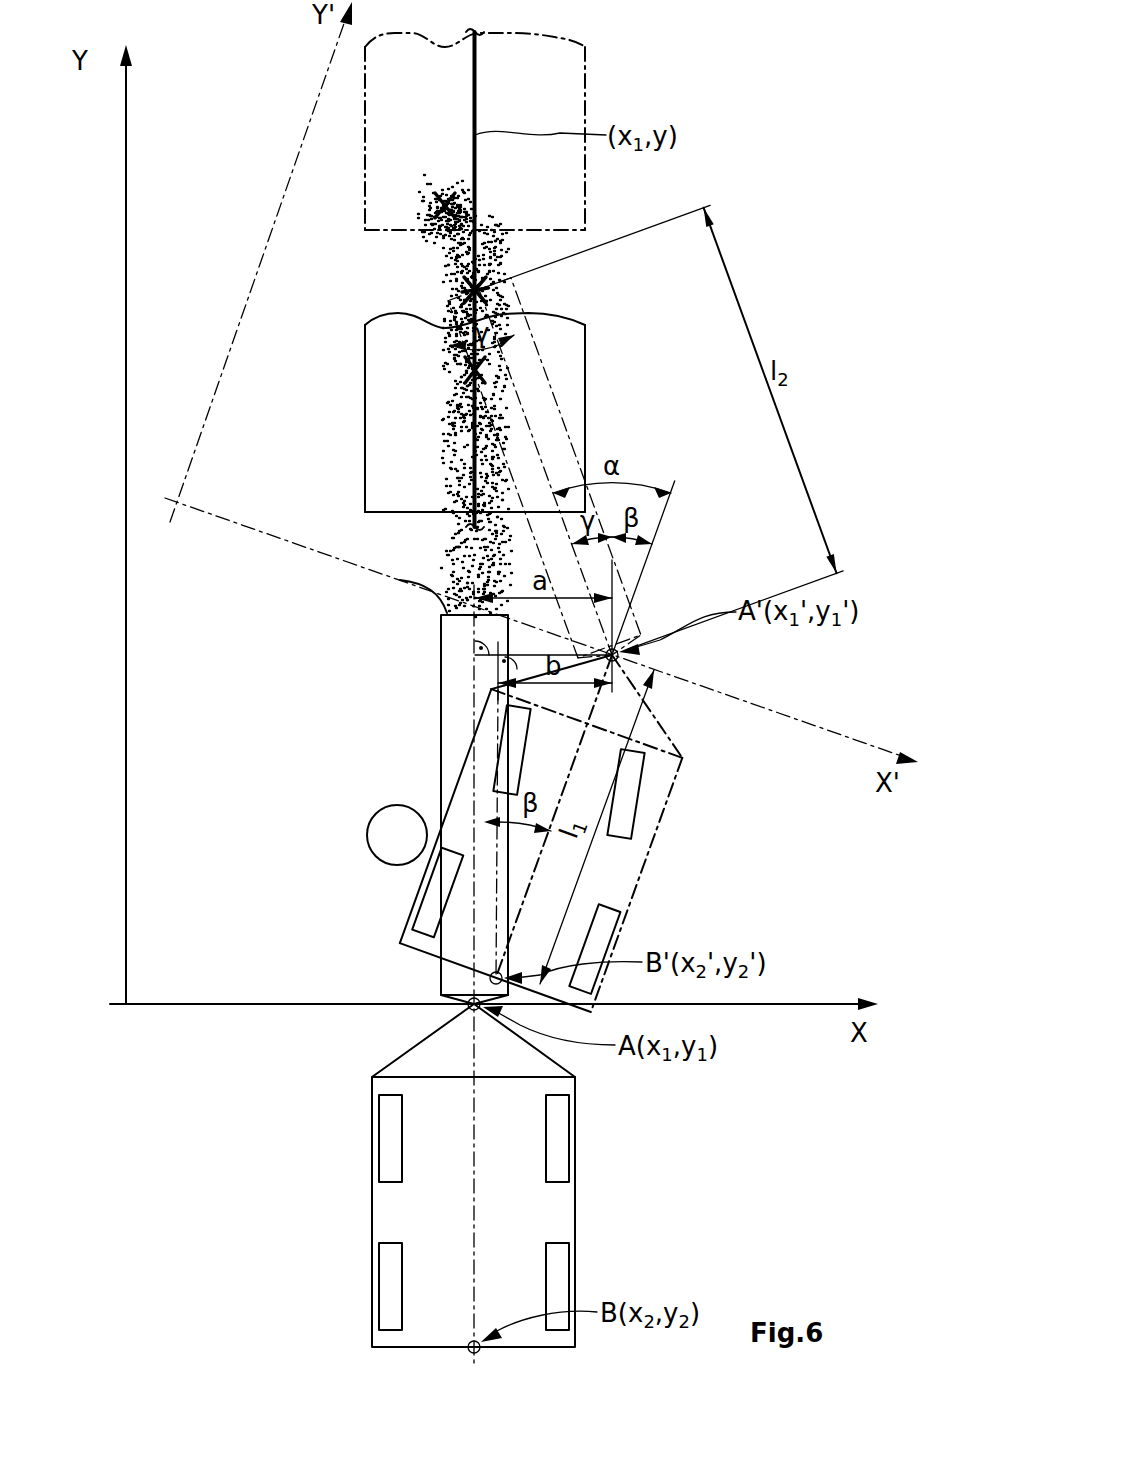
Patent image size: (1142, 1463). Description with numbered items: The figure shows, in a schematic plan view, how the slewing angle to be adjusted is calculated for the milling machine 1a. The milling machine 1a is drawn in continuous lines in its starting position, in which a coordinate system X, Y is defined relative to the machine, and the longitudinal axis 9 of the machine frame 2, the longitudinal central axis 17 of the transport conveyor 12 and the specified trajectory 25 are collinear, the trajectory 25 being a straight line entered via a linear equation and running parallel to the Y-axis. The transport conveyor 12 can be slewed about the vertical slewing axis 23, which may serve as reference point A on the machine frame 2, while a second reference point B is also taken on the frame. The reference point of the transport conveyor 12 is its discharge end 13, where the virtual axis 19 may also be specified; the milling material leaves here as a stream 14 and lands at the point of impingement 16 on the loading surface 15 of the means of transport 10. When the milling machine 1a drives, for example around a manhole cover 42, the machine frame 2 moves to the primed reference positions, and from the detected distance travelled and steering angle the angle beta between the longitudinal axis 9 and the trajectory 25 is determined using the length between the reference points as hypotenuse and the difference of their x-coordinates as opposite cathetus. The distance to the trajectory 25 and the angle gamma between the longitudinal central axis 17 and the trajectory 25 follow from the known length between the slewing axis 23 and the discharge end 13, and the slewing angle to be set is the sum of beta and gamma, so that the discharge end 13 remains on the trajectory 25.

The milling machine 1a is at (335, 1160).
The machine frame 2 is at (372, 1215).
The longitudinal axis 9 is at (472, 1240).
The means of transport 10 is at (365, 405).
The transport conveyor 12 is at (441, 672).
The discharge end 13 is at (400, 580).
The spread pattern / material jet 14 is at (488, 265).
The loading surface 15 is at (557, 116).
The point of impingement 16 is at (435, 200).
The longitudinal central axis 17 is at (587, 575).
The virtual axis 19 is at (462, 290).
The slewing axis 23 is at (467, 999).
The trajectory 25 is at (474, 150).
The manhole cover 42 is at (375, 813).